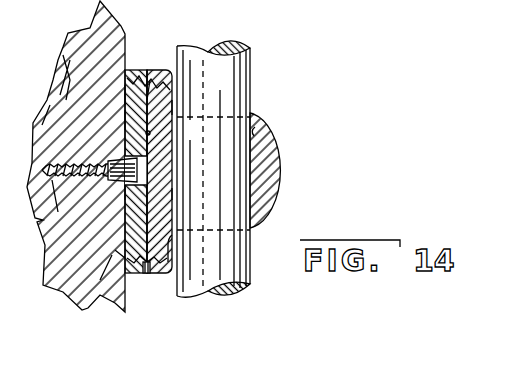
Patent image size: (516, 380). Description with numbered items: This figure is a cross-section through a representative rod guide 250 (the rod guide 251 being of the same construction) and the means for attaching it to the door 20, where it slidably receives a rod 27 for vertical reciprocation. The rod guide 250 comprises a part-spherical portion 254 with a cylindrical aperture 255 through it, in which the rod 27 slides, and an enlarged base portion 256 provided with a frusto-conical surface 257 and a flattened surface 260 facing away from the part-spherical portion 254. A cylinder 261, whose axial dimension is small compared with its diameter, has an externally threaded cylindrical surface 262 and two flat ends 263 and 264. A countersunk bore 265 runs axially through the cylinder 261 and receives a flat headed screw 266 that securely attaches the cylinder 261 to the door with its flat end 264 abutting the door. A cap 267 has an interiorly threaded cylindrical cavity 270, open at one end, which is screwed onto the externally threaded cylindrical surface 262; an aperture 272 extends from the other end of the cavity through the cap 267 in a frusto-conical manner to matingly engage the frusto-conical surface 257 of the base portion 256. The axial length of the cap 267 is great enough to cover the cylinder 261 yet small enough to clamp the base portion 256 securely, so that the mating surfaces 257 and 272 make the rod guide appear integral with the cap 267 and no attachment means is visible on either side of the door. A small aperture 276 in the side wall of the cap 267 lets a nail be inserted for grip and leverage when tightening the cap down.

The wall panel 20 is at (80, 42).
The rod 27 is at (220, 72).
The rod guide 250 is at (290, 197).
The rod guide 251 is at (118, 228).
The part-spherical portion 254 is at (273, 161).
The cylindrical aperture 255 is at (254, 131).
The enlarged base portion 256 is at (168, 195).
The frusto-conical surface 257 is at (172, 108).
The flattened surface 260 is at (142, 212).
The cylinder 261 is at (128, 97).
The externally threaded cylindrical surface 262 is at (111, 257).
The flat end 263 is at (145, 134).
The flat end 264 is at (126, 120).
The countersunk bore 265 is at (121, 192).
The flat headed screw 266 is at (73, 166).
The cap 267 is at (162, 69).
The interiorly threaded cylindrical cavity 270 is at (152, 80).
The aperture 272 is at (168, 238).
The aperture 276 is at (145, 275).